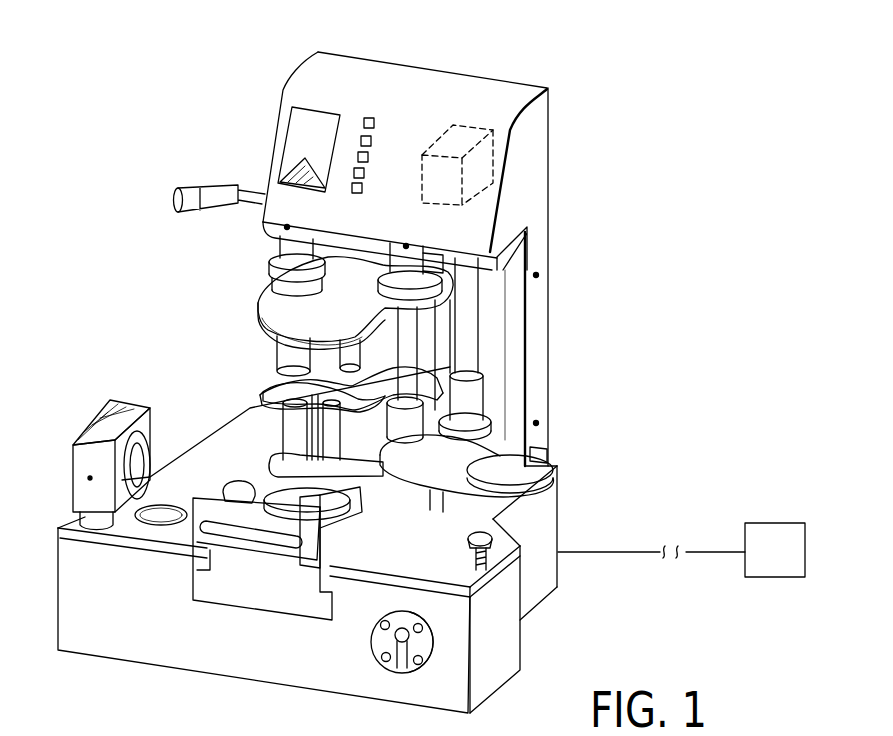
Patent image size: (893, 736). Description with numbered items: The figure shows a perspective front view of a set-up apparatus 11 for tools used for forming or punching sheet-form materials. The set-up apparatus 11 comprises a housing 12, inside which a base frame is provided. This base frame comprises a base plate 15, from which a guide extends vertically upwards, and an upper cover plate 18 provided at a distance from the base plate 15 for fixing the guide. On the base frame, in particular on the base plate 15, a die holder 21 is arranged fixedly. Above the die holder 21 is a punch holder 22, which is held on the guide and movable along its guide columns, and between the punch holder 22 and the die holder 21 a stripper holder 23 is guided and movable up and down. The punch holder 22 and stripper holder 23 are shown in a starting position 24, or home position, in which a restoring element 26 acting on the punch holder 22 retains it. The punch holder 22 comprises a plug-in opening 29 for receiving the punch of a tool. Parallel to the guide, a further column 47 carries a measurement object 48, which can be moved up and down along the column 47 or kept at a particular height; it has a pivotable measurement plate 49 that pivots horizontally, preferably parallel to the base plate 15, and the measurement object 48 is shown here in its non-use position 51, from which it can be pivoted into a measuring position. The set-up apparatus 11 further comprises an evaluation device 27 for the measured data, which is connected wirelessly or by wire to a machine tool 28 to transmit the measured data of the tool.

The set-up apparatus 11 is at (600, 55).
The housing 12 is at (305, 42).
The base plate 15 is at (440, 570).
The upper cover plate 18 is at (549, 254).
The die holder 21 is at (398, 527).
The punch holder 22 is at (245, 280).
The stripper holder 23 is at (245, 353).
The starting position 24 is at (212, 301).
The restoring element 26 is at (328, 398).
The evaluation device 27 is at (480, 163).
The machine tool 28 is at (792, 565).
The plug-in opening 29 is at (450, 367).
The further column 47 is at (470, 300).
The measurement object 48 is at (522, 440).
The pivotable measurement plate 49 is at (522, 472).
The non-use position 51 is at (583, 486).